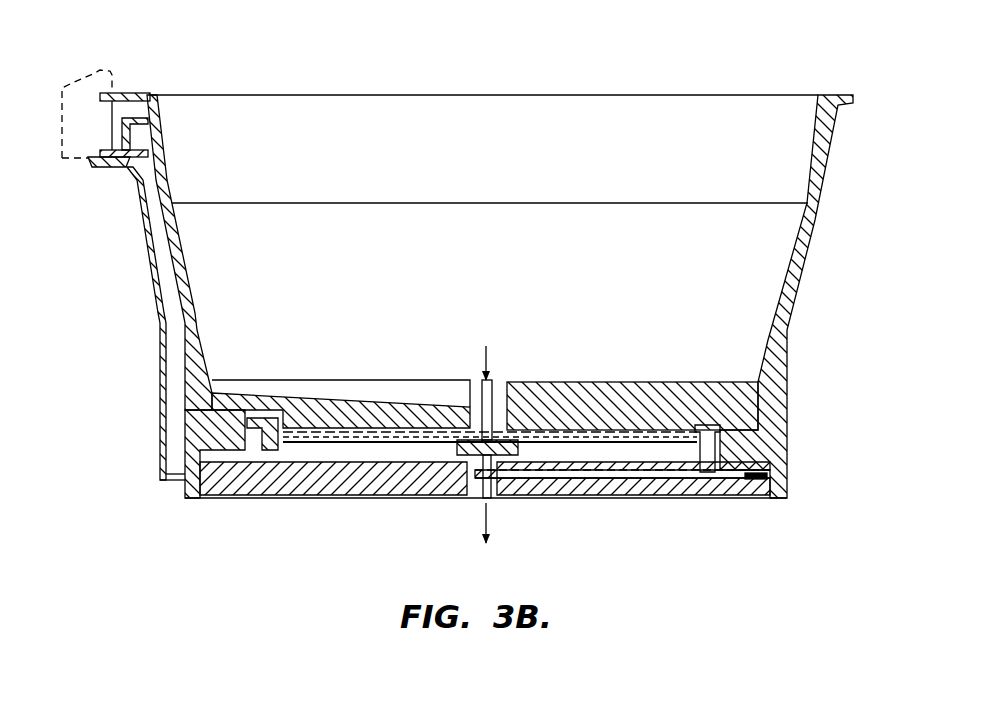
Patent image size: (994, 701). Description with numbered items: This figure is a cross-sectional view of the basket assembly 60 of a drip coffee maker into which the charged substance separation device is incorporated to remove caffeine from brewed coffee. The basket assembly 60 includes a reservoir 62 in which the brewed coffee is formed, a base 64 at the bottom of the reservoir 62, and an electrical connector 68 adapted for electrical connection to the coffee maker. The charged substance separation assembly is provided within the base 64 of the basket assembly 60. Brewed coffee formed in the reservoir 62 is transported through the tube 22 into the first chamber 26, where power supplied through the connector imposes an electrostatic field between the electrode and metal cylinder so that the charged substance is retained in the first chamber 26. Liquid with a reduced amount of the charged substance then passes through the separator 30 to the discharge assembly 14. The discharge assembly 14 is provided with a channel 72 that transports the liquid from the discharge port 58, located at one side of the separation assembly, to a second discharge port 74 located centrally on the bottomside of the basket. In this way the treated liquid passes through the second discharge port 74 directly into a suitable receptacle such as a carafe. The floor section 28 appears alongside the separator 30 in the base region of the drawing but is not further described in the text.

The discharge assembly 14 is at (718, 432).
The tube 22 is at (493, 400).
The first chamber 26 is at (372, 448).
The right floor section 28 is at (662, 405).
The separator 30 is at (338, 442).
The discharge port 58 is at (742, 469).
The basket assembly 60 is at (853, 75).
The reservoir 62 is at (565, 118).
The base 64 is at (806, 413).
The electrical connector 68 is at (113, 57).
The channel 72 is at (610, 472).
The second discharge port 74 is at (490, 498).